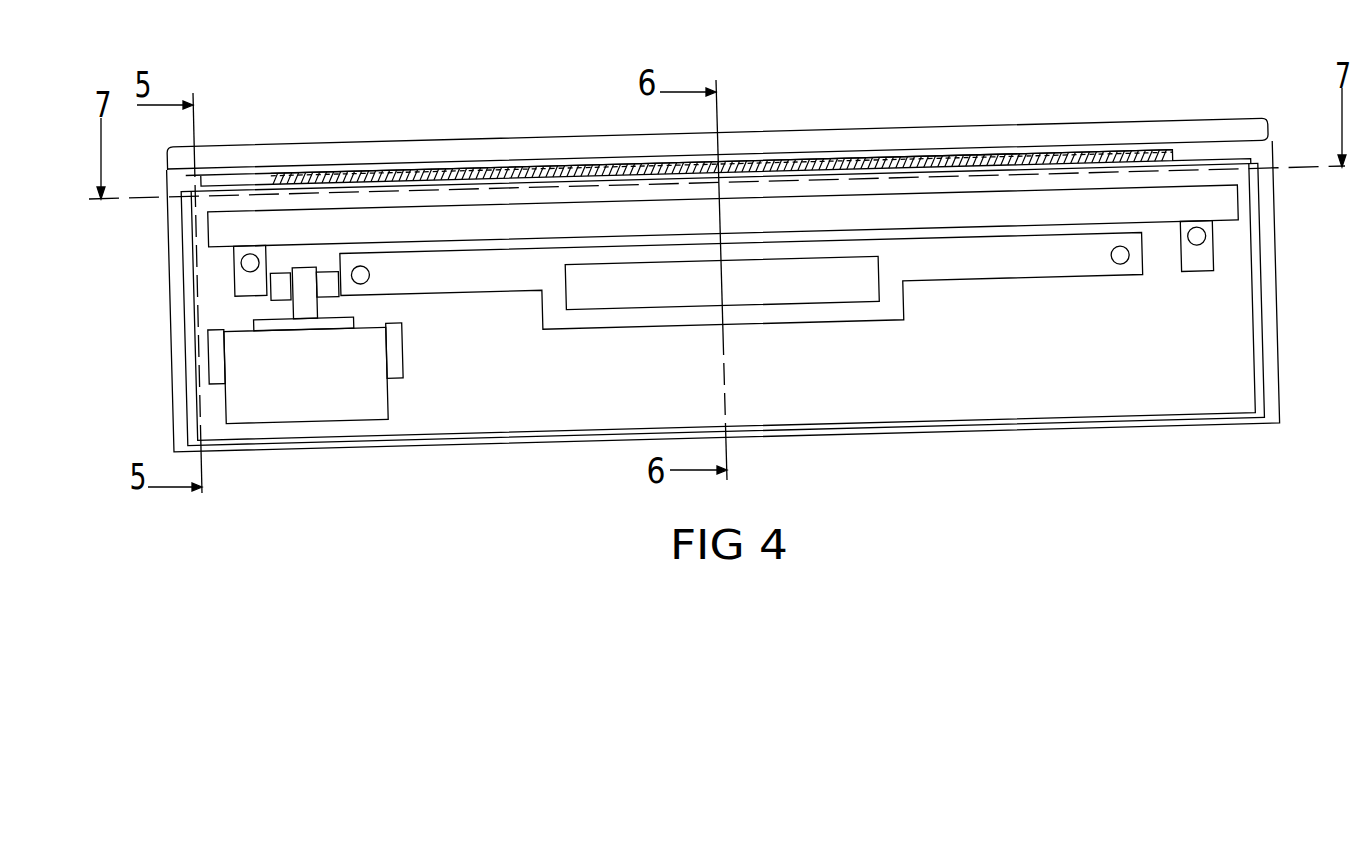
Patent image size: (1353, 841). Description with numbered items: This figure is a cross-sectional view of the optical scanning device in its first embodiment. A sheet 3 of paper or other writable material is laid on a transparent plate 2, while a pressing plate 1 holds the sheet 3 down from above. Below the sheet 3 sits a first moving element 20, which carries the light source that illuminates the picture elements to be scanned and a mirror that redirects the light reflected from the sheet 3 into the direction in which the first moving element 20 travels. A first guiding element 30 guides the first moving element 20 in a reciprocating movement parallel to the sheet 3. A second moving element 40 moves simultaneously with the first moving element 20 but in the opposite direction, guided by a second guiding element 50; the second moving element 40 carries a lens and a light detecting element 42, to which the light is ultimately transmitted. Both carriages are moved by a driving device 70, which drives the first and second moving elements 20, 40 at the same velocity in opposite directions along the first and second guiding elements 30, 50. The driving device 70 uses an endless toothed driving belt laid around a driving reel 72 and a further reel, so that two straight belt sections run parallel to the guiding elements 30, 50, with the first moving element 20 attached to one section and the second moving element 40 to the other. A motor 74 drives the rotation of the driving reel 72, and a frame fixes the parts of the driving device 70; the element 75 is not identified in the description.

The pressing plate 1 is at (847, 140).
The transparent plate 2 is at (782, 153).
The sheet 3 is at (813, 160).
The first moving element 20 is at (942, 208).
The first guiding element 30 is at (248, 263).
The second moving element 40 is at (928, 267).
The light detecting element 42 is at (743, 290).
The second guiding element 50 is at (362, 278).
The driving device 70 is at (208, 310).
The driving reel 72 is at (278, 280).
The motor 74 is at (355, 392).
The flange 75 is at (218, 352).